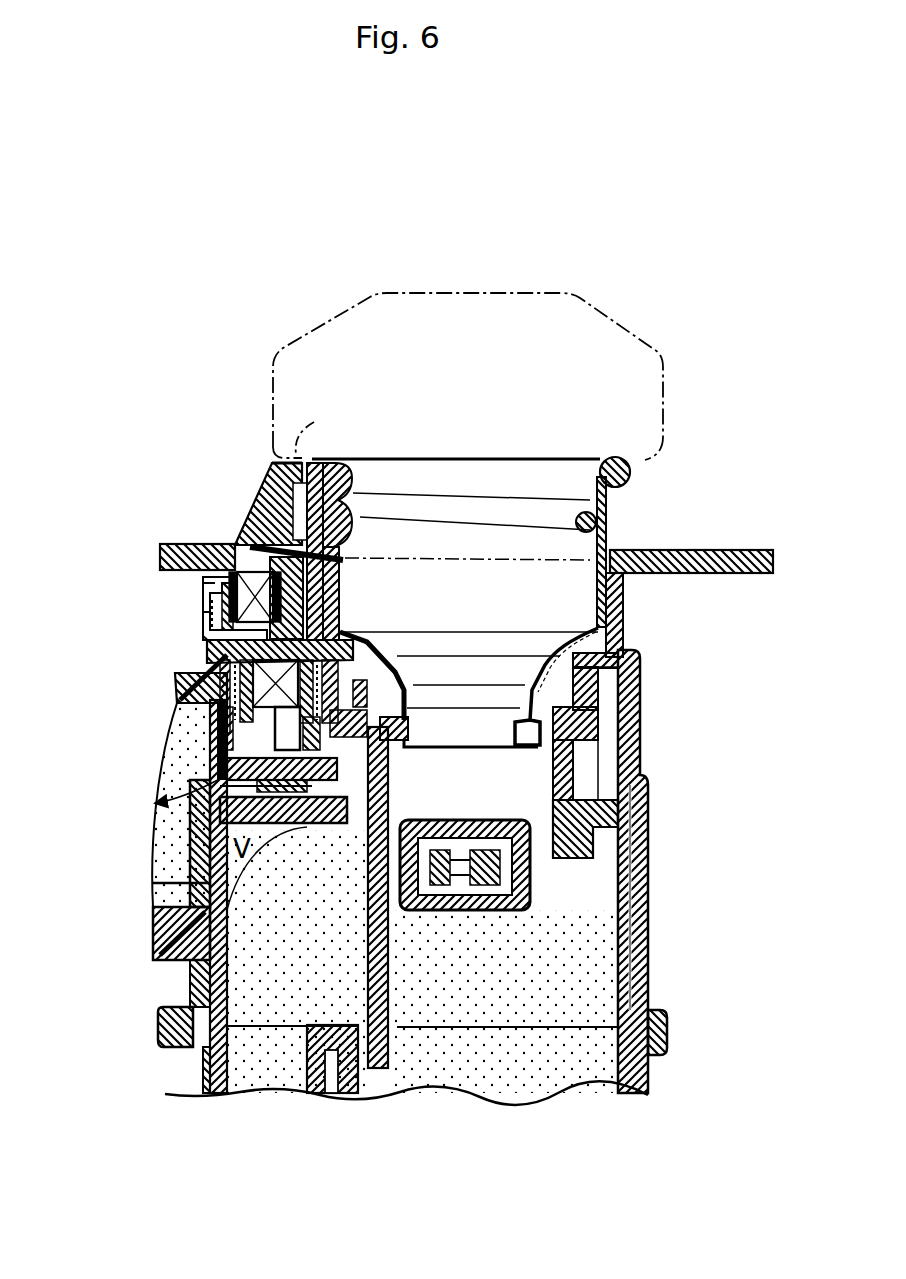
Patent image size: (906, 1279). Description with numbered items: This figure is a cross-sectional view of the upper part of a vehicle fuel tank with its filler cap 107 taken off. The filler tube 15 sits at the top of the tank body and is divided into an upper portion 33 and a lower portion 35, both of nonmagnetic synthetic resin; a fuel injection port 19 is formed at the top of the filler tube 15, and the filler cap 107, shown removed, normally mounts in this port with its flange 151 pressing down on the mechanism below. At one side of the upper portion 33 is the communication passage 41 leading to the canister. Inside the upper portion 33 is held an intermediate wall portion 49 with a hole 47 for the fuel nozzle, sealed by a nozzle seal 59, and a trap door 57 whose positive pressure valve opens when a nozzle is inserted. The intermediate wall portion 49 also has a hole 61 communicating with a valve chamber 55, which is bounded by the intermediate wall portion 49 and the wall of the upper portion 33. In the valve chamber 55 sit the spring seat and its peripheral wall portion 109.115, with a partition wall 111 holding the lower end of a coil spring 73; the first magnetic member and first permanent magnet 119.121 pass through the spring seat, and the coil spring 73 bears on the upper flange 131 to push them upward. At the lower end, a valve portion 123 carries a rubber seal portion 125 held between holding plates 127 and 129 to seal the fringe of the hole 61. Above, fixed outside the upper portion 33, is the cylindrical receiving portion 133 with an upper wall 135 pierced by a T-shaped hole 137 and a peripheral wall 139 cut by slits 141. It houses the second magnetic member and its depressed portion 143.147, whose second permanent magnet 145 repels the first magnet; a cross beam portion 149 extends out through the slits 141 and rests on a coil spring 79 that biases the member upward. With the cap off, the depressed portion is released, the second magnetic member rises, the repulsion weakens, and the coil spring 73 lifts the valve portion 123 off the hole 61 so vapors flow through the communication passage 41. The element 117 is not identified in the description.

The filler cap 107 is at (545, 308).
The flange 151 is at (314, 422).
The second magnetic member and depressed portion 143.147 is at (272, 463).
The hole 137 is at (262, 540).
The peripheral wall 139 is at (336, 588).
The slits 141 is at (207, 600).
The receiving portion 133 is at (257, 540).
The upper wall 135 is at (240, 540).
The upper flange 131 is at (203, 668).
The cross beam portion 149 is at (205, 585).
The second permanent magnet 145 is at (203, 618).
The coil spring 79 is at (203, 645).
The first magnetic member and first permanent magnet 119.121 is at (342, 636).
The nozzle seal 59 is at (515, 722).
The fuel injection port 19 is at (622, 585).
The intermediate wall portion 49 is at (597, 775).
The filler tube 15 is at (716, 871).
The upper portion 33 is at (637, 943).
The lower portion 35 is at (667, 1052).
The hole 47 is at (605, 905).
The trap door 57 is at (593, 857).
The valve portion 123 is at (490, 836).
The seal portion 125 is at (471, 823).
The holding plate 127 is at (340, 770).
The holding plate 129 is at (350, 802).
The communication passage 41 is at (212, 722).
The spring seat and peripheral wall portion 109.115 is at (178, 720).
The coil spring 73 is at (190, 750).
The hole 61 is at (190, 882).
The valve chamber 55 is at (175, 905).
The partition wall 111 is at (227, 753).
The flow path 117 is at (215, 800).